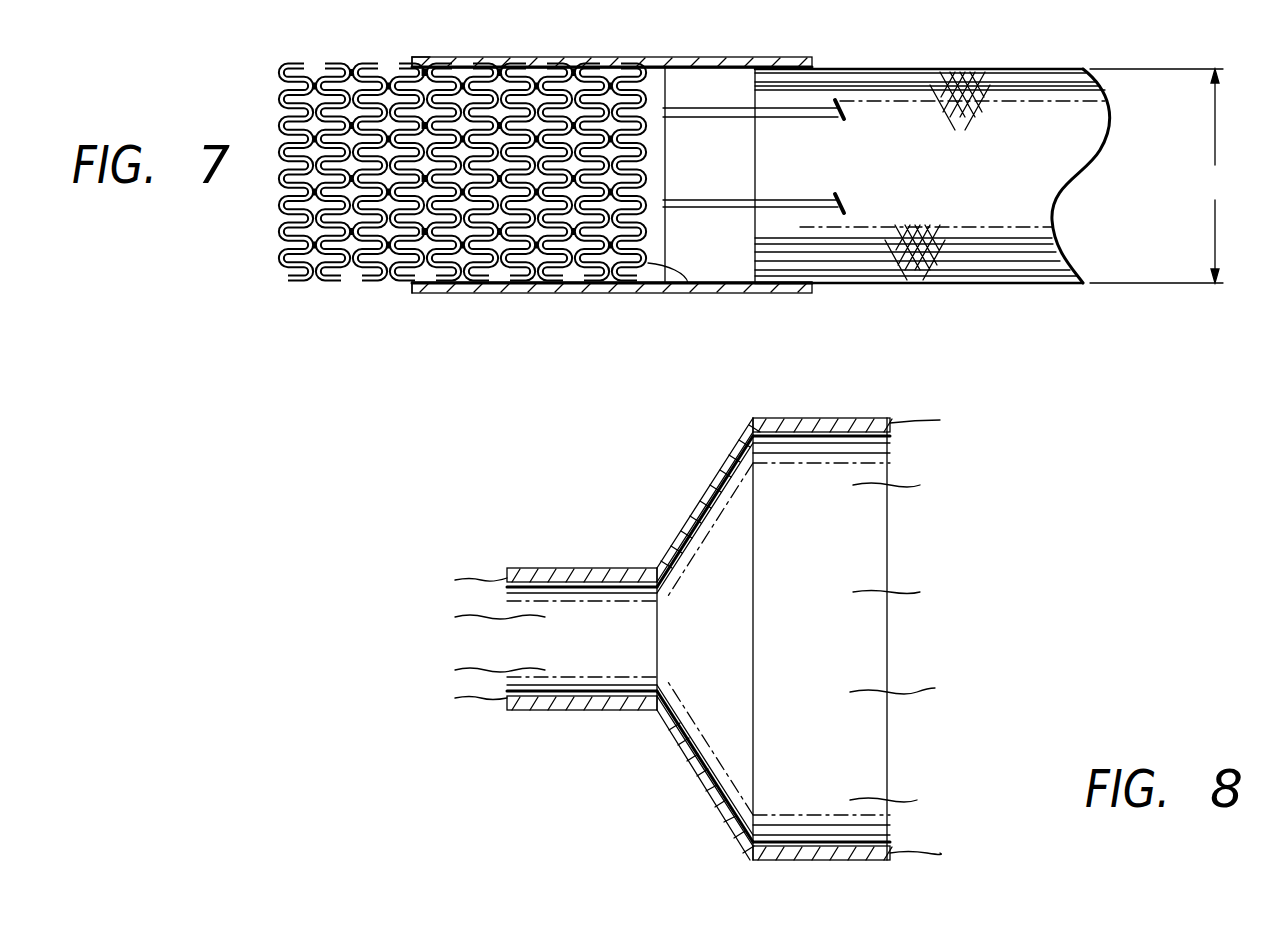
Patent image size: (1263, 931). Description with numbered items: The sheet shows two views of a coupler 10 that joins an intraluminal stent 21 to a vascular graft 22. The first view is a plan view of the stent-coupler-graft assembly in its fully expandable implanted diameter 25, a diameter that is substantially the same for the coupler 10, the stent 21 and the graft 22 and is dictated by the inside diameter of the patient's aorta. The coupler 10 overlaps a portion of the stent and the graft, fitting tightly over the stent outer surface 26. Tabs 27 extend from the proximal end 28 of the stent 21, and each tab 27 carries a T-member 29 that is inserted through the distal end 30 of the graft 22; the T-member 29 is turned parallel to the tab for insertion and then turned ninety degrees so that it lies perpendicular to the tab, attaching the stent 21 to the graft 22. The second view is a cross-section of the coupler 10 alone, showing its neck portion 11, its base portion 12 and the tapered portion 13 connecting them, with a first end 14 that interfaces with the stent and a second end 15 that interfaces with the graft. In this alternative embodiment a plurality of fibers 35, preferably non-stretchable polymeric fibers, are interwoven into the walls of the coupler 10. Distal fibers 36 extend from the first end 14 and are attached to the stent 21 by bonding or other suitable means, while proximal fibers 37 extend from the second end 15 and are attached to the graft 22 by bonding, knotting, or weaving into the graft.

In FIG. 7, the coupler 10 is at (638, 331).
In FIG. 8, the coupler 10 is at (635, 771).
In FIG. 7, the neck portion 11 is at (429, 293).
In FIG. 8, the neck portion 11 is at (553, 712).
In FIG. 7, the base portion 12 is at (776, 295).
In FIG. 8, the base portion 12 is at (865, 418).
In FIG. 8, the tapered portion 13 is at (690, 773).
In FIG. 7, the first end 14 is at (411, 72).
In FIG. 8, the first end 14 is at (504, 650).
In FIG. 7, the second end 15 is at (812, 65).
In FIG. 8, the second end 15 is at (890, 537).
In FIG. 7, the intraluminal stent 21 is at (341, 282).
In FIG. 7, the vascular graft 22 is at (937, 268).
In FIG. 7, the implanted diameter 25 is at (1159, 176).
In FIG. 7, the stent outer surface 26 is at (486, 283).
In FIG. 7, the tab 27 is at (697, 207).
In FIG. 7, the proximal end 28 is at (688, 283).
In FIG. 7, the T-member 29 is at (843, 213).
In FIG. 7, the distal end 30 is at (753, 94).
In FIG. 8, the fibers 35 is at (826, 418).
In FIG. 8, the distal fibers 36 is at (470, 578).
In FIG. 8, the proximal fibers 37 is at (943, 420).